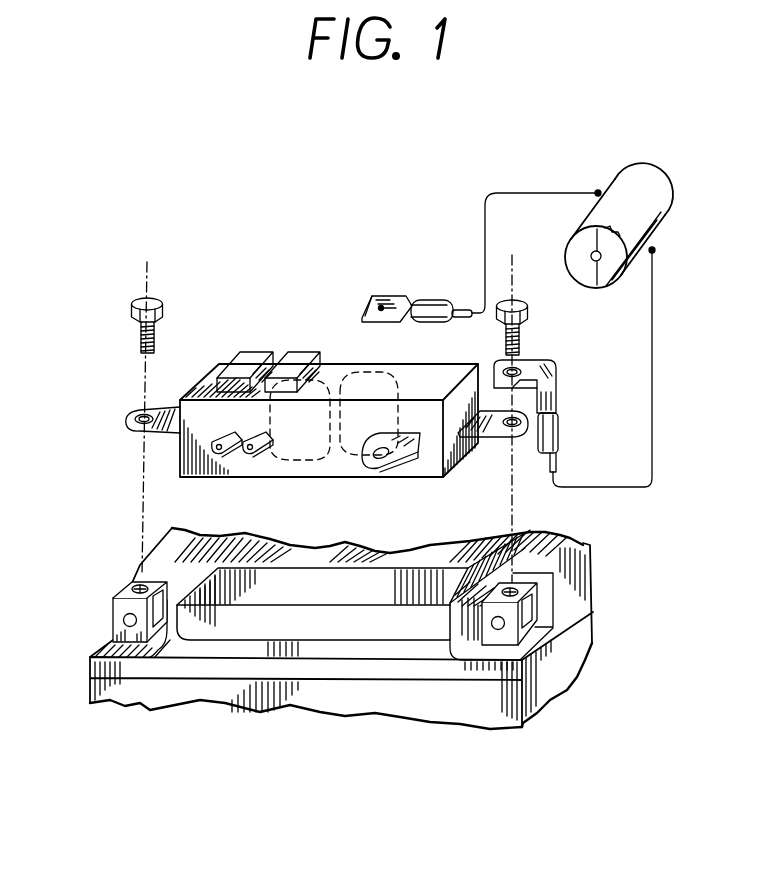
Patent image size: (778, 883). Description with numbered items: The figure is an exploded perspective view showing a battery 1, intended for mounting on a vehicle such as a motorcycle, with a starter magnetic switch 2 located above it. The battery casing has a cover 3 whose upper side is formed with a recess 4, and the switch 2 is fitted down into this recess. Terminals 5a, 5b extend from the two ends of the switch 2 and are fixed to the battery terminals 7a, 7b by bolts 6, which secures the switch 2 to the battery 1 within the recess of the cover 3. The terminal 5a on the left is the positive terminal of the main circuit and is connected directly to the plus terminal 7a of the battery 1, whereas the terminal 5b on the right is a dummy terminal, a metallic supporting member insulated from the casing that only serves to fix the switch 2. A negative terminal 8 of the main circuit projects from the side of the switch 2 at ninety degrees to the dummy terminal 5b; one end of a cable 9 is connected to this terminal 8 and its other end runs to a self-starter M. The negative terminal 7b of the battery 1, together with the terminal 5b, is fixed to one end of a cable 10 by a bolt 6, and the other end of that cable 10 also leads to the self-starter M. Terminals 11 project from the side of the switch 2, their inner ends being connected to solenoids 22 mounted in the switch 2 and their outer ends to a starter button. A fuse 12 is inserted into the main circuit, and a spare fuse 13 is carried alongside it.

The battery 1 is at (270, 730).
The starter magnetic switch 2 is at (243, 330).
The cover 3 is at (405, 678).
The recess 4 is at (362, 650).
The terminal 5a is at (129, 411).
The terminal 5b is at (498, 432).
The bolt 6 is at (144, 300).
The battery terminal 7a is at (116, 600).
The battery terminal 7b is at (538, 592).
The negative terminal 8 is at (381, 462).
The cable 9 is at (440, 305).
The cable 10 is at (558, 424).
The terminals 11 is at (250, 456).
The fuse 12 is at (255, 358).
The spare fuse 13 is at (303, 358).
The solenoids 22 is at (342, 468).
The self-starter M is at (642, 182).